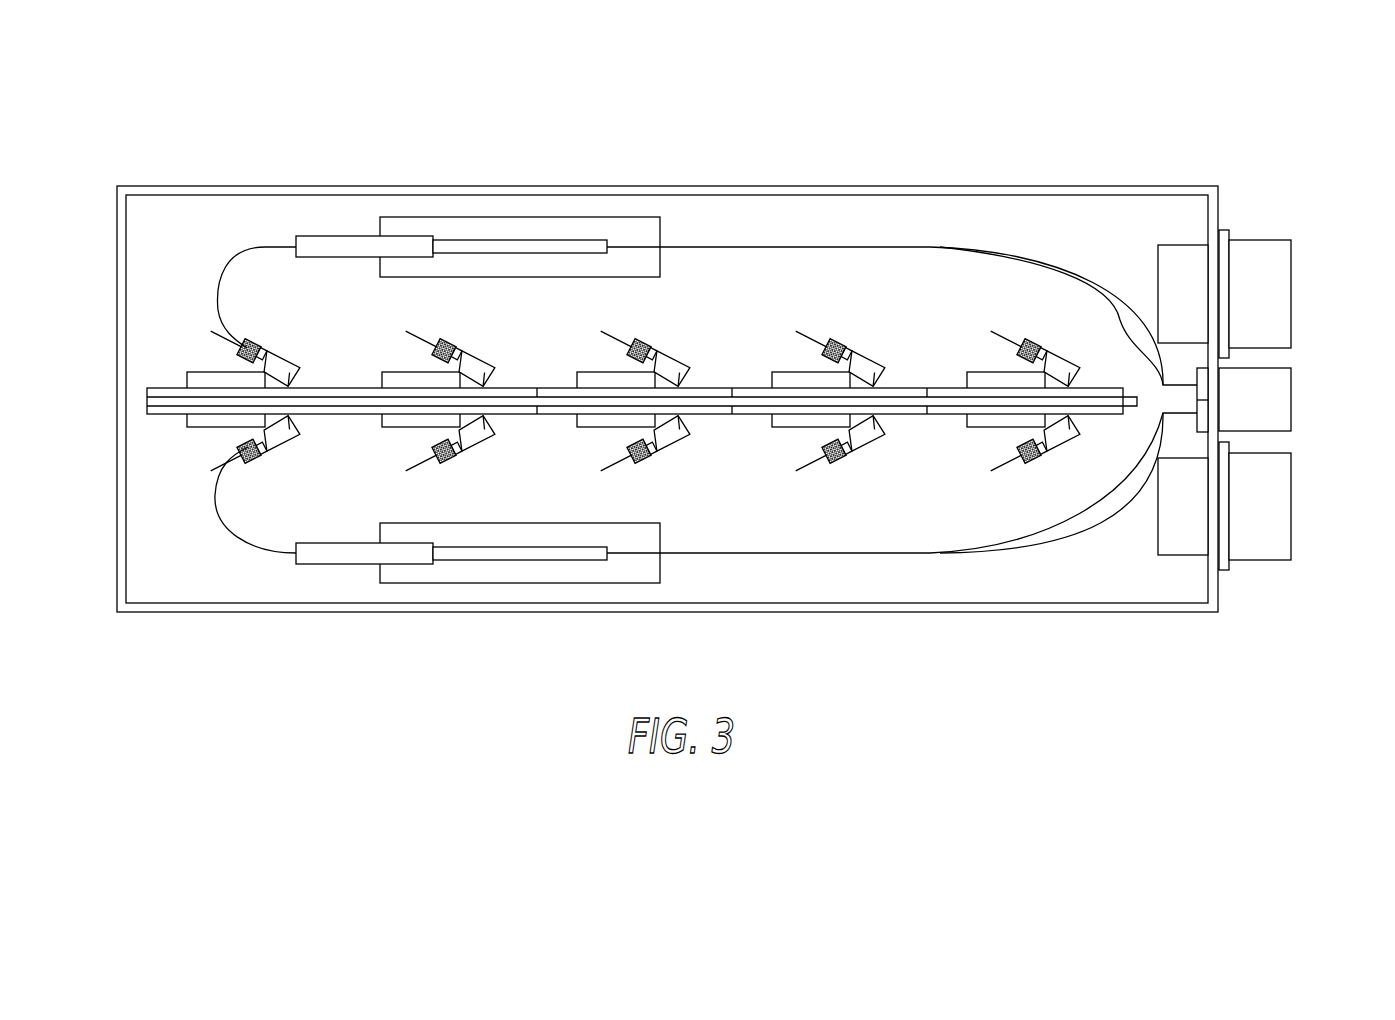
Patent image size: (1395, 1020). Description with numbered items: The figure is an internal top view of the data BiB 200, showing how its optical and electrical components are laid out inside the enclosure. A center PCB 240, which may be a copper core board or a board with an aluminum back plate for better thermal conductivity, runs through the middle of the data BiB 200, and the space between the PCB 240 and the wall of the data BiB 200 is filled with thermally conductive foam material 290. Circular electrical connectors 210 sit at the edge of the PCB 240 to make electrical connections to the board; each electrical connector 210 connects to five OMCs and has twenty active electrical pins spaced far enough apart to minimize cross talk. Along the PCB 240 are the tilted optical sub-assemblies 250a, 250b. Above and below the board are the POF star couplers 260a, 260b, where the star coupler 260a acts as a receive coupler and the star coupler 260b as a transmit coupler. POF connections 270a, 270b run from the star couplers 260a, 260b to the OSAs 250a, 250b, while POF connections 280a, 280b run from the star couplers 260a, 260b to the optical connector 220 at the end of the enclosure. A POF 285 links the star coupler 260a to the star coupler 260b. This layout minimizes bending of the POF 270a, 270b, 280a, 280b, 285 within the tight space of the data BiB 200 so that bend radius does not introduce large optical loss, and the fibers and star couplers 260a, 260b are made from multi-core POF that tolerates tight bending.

The data BiB 200 is at (455, 672).
The circular electrical connector 210 is at (1258, 264).
The optical connector 220 is at (1270, 398).
The PCB 240 is at (147, 401).
The optical sub-assembly 250a is at (290, 440).
The optical sub-assembly 250b is at (293, 383).
The POF star coupler 260a is at (538, 584).
The POF star coupler 260b is at (532, 217).
The POF connection 270a is at (249, 546).
The POF connection 270b is at (243, 249).
The POF connection 280a is at (1087, 523).
The POF connection 280b is at (1050, 263).
The POF 285 is at (1108, 278).
The thermally conductive foam material 290 is at (875, 575).